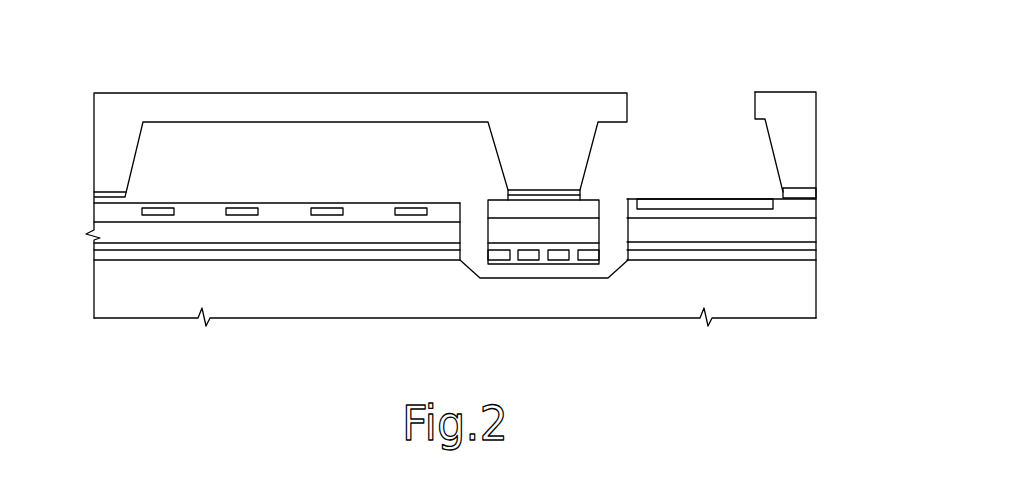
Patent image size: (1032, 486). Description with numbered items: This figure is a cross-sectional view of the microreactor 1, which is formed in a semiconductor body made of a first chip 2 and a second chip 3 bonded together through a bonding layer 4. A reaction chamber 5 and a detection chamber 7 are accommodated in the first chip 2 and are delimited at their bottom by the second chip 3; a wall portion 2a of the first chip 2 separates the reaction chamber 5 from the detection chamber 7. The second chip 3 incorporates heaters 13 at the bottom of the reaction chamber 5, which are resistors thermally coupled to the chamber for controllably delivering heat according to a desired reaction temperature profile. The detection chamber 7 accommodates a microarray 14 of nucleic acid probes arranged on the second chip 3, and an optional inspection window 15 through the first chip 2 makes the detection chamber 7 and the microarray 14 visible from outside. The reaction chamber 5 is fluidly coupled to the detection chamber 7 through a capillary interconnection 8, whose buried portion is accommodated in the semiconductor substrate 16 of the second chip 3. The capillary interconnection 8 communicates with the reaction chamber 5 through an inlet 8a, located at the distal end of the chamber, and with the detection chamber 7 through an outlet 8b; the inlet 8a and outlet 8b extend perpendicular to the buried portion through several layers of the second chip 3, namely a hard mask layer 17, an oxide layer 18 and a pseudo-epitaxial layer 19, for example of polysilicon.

The microreactor 1 is at (837, 115).
The first chip 2 is at (821, 148).
The wall portion 2a is at (541, 177).
The second chip 3 is at (158, 334).
The bonding layer 4 is at (127, 197).
The reaction chamber 5 is at (322, 140).
The detection chamber 7 is at (663, 146).
The fluidic capillary interconnection 8 is at (538, 278).
The inlet 8a is at (473, 200).
The outlet 8b is at (610, 200).
The heater 13 is at (237, 205).
The microarray 14 is at (695, 199).
The inspection window 15 is at (722, 95).
The semiconductor substrate 16 is at (105, 312).
The hard mask layer 17 is at (370, 262).
The oxide layer 18 is at (287, 262).
The pseudo-epitaxial layer 19 is at (288, 233).